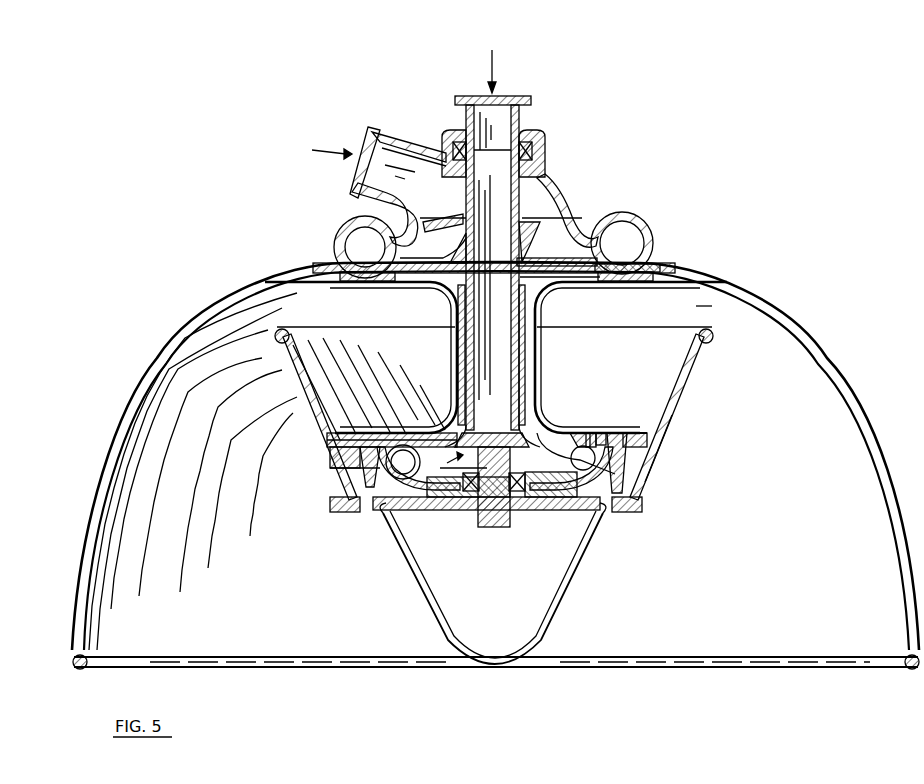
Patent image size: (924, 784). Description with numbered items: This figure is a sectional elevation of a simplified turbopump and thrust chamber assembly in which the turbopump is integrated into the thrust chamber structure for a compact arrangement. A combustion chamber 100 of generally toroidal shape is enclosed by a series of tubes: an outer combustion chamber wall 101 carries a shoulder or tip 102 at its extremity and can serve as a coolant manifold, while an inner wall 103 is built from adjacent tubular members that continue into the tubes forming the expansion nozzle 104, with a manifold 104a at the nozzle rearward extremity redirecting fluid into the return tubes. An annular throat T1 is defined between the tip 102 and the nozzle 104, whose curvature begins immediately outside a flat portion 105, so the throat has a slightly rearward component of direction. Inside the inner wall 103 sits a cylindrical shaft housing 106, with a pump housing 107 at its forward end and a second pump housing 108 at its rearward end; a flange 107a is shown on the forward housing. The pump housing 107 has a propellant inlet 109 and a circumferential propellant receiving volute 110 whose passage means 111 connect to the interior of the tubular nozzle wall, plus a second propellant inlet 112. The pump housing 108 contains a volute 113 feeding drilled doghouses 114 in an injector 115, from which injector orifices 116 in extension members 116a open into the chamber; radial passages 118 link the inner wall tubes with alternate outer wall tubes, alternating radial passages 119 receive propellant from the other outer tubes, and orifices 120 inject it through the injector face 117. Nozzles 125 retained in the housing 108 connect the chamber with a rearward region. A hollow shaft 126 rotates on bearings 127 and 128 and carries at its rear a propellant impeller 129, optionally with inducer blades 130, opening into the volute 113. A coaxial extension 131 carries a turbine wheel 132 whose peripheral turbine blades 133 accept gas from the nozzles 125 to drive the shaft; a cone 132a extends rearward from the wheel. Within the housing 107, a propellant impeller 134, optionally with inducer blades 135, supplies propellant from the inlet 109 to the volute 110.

The combustion chamber 100 is at (636, 375).
The outer combustion chamber wall 101 is at (695, 378).
The tip 102 is at (716, 341).
The inner wall 103 is at (534, 376).
The expansion nozzle 104 is at (829, 360).
The manifold 104a is at (591, 284).
The flat portion 105 is at (908, 668).
The shaft housing 106 is at (527, 343).
The pump housing 107 is at (562, 198).
The cover flange 107a is at (577, 274).
The second pump housing 108 is at (570, 494).
The propellant inlet 109 is at (398, 143).
The propellant receiving volute 110 is at (641, 224).
The passage means 111 is at (630, 281).
The second propellant inlet 112 is at (520, 116).
The volute 113 is at (572, 461).
The doghouses 114 is at (657, 456).
The injector 115 is at (579, 423).
The injector orifices 116 is at (637, 428).
The extension members 116a is at (638, 427).
The injector face 117 is at (588, 430).
The radial passages 118 is at (630, 432).
The radial passages 119 is at (408, 440).
The orifices 120 is at (391, 440).
The nozzles 125 is at (358, 483).
The hollow shaft 126 is at (460, 350).
The bearing 127 is at (448, 284).
The bearing 128 is at (470, 491).
The propellant impeller 129 is at (432, 477).
The inducer blades 130 is at (510, 432).
The extension 131 is at (493, 512).
The turbine wheel 132 is at (535, 512).
The cone 132a is at (578, 568).
The turbine blades 133 is at (623, 512).
The propellant impeller 134 is at (575, 252).
The inducer blades 135 is at (552, 228).
The annular throat T1 is at (703, 309).